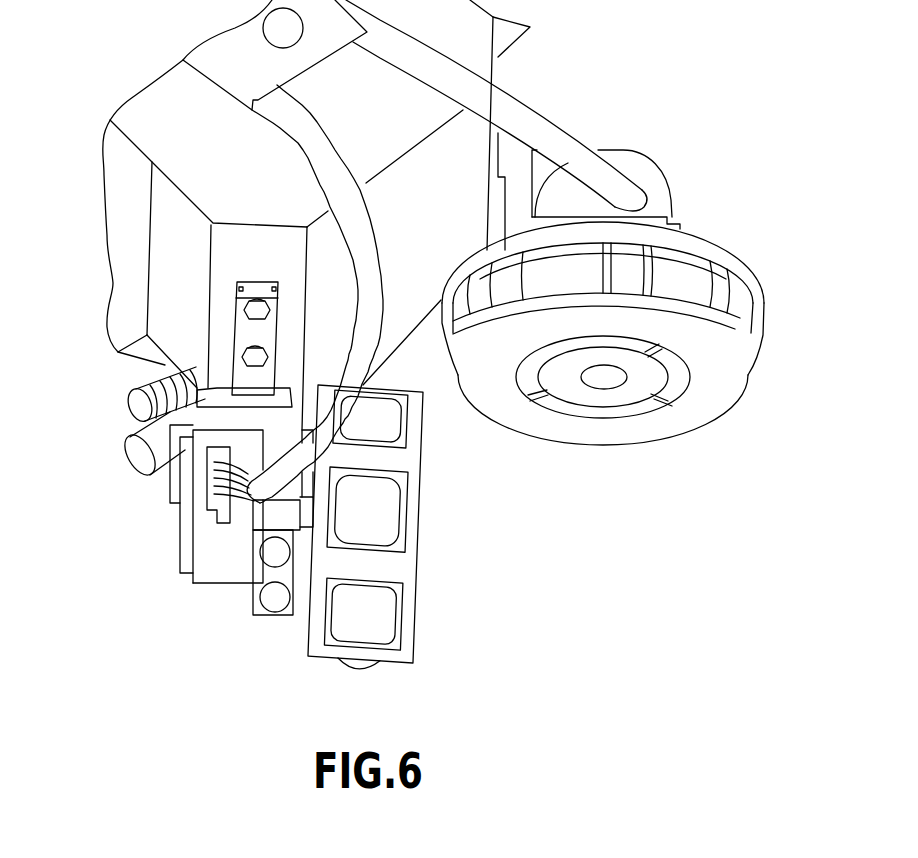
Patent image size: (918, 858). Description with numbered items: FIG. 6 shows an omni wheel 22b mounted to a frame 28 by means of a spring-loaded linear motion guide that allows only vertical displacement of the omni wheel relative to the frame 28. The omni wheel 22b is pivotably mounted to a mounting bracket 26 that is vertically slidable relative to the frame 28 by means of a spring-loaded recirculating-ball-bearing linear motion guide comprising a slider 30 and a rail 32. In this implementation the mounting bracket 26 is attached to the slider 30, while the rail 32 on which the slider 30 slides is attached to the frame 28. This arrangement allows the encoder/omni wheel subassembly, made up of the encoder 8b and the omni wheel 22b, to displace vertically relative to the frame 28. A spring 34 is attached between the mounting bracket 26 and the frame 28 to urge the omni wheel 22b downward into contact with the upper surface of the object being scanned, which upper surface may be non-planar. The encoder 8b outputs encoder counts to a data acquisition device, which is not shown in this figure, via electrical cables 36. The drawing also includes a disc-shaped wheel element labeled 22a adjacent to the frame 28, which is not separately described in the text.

The encoder 8b is at (180, 550).
The light fixture 22a is at (713, 244).
The omni wheel 22b is at (421, 507).
The mounting bracket 26 is at (160, 362).
The frame 28 is at (177, 247).
The slider 30 is at (225, 395).
The rail 32 is at (280, 324).
The spring 34 is at (138, 408).
The electrical cables 36 is at (417, 80).